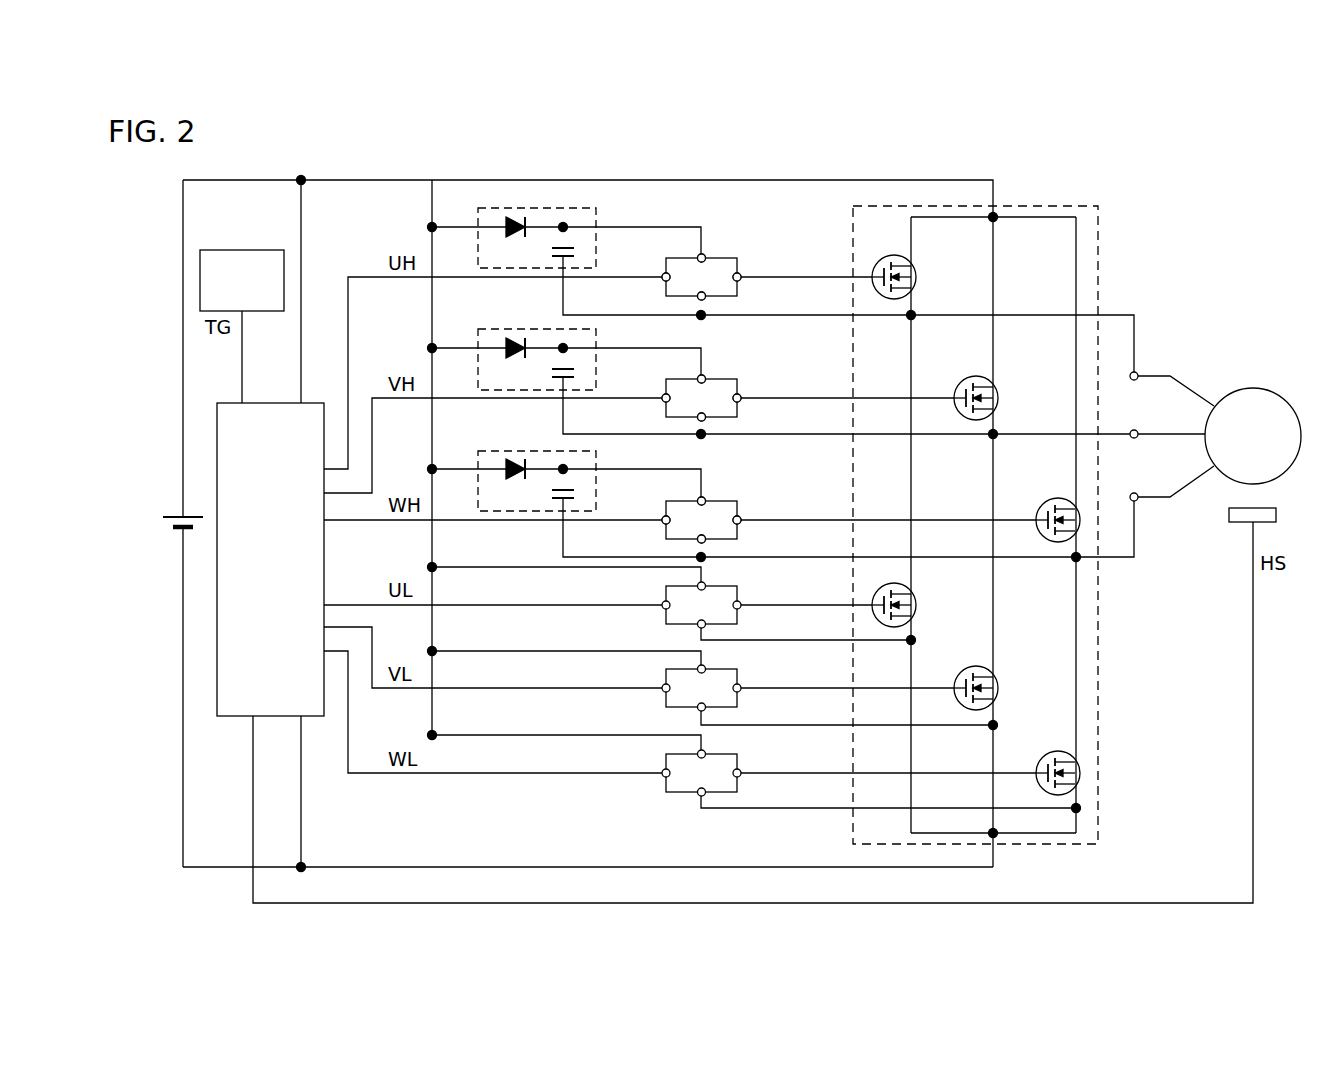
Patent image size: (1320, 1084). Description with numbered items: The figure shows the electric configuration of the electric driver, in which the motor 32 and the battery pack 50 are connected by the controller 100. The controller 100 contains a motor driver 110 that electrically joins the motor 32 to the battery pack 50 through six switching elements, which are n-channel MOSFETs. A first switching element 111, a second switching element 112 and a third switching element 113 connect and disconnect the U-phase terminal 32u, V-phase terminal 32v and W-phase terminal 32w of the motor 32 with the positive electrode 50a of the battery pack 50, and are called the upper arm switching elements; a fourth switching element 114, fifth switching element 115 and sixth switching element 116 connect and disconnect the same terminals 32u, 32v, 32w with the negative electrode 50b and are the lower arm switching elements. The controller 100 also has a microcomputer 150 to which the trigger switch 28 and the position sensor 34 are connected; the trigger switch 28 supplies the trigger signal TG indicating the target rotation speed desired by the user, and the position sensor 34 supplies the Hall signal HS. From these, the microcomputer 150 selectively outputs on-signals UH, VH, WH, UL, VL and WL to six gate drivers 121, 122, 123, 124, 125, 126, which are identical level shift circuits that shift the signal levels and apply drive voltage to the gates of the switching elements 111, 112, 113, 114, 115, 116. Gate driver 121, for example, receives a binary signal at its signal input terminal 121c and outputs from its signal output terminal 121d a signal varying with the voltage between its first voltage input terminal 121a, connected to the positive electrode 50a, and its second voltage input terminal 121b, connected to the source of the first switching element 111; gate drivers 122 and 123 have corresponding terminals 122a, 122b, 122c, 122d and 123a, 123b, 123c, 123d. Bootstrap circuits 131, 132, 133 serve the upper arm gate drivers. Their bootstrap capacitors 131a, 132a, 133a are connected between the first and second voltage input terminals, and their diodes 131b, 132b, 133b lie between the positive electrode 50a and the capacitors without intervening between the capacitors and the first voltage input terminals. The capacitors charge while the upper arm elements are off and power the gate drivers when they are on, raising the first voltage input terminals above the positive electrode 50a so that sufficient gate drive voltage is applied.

The trigger switch 28 is at (242, 250).
The battery pack 50 is at (152, 525).
The positive electrode 50a is at (172, 512).
The negative electrode 50b is at (178, 537).
The microcomputer 150 is at (235, 716).
The controller 100 is at (1094, 176).
The motor driver 110 is at (1001, 497).
The first switching element 111 is at (916, 270).
The second switching element 112 is at (998, 391).
The third switching element 113 is at (1056, 497).
The fourth switching element 114 is at (916, 598).
The fifth switching element 115 is at (998, 681).
The sixth switching element 116 is at (1080, 766).
The gate driver 121 is at (716, 248).
The first voltage input terminal 121a is at (704, 255).
The second voltage input terminal 121b is at (707, 299).
The signal input terminal 121c is at (662, 282).
The signal output terminal 121d is at (742, 275).
The gate driver 122 is at (717, 374).
The first voltage input terminal 122a is at (704, 376).
The second voltage input terminal 122b is at (707, 420).
The signal input terminal 122c is at (662, 403).
The signal output terminal 122d is at (742, 396).
The gate driver 123 is at (717, 496).
The first voltage input terminal 123a is at (704, 498).
The second voltage input terminal 123b is at (707, 542).
The signal input terminal 123c is at (662, 525).
The signal output terminal 123d is at (742, 518).
The gate driver 124 is at (740, 587).
The gate driver 125 is at (740, 670).
The gate driver 126 is at (740, 755).
The bootstrap circuit 131 is at (556, 203).
The bootstrap capacitor 131a is at (573, 248).
The diode 131b is at (519, 214).
The bootstrap circuit 132 is at (556, 335).
The bootstrap capacitor 132a is at (573, 369).
The diode 132b is at (519, 336).
The bootstrap circuit 133 is at (556, 457).
The bootstrap capacitor 133a is at (573, 491).
The diode 133b is at (519, 458).
The motor 32 is at (1220, 416).
The U-phase terminal 32u is at (1140, 374).
The V-phase terminal 32v is at (1139, 432).
The W-phase terminal 32w is at (1139, 495).
The position sensor 34 is at (1229, 515).